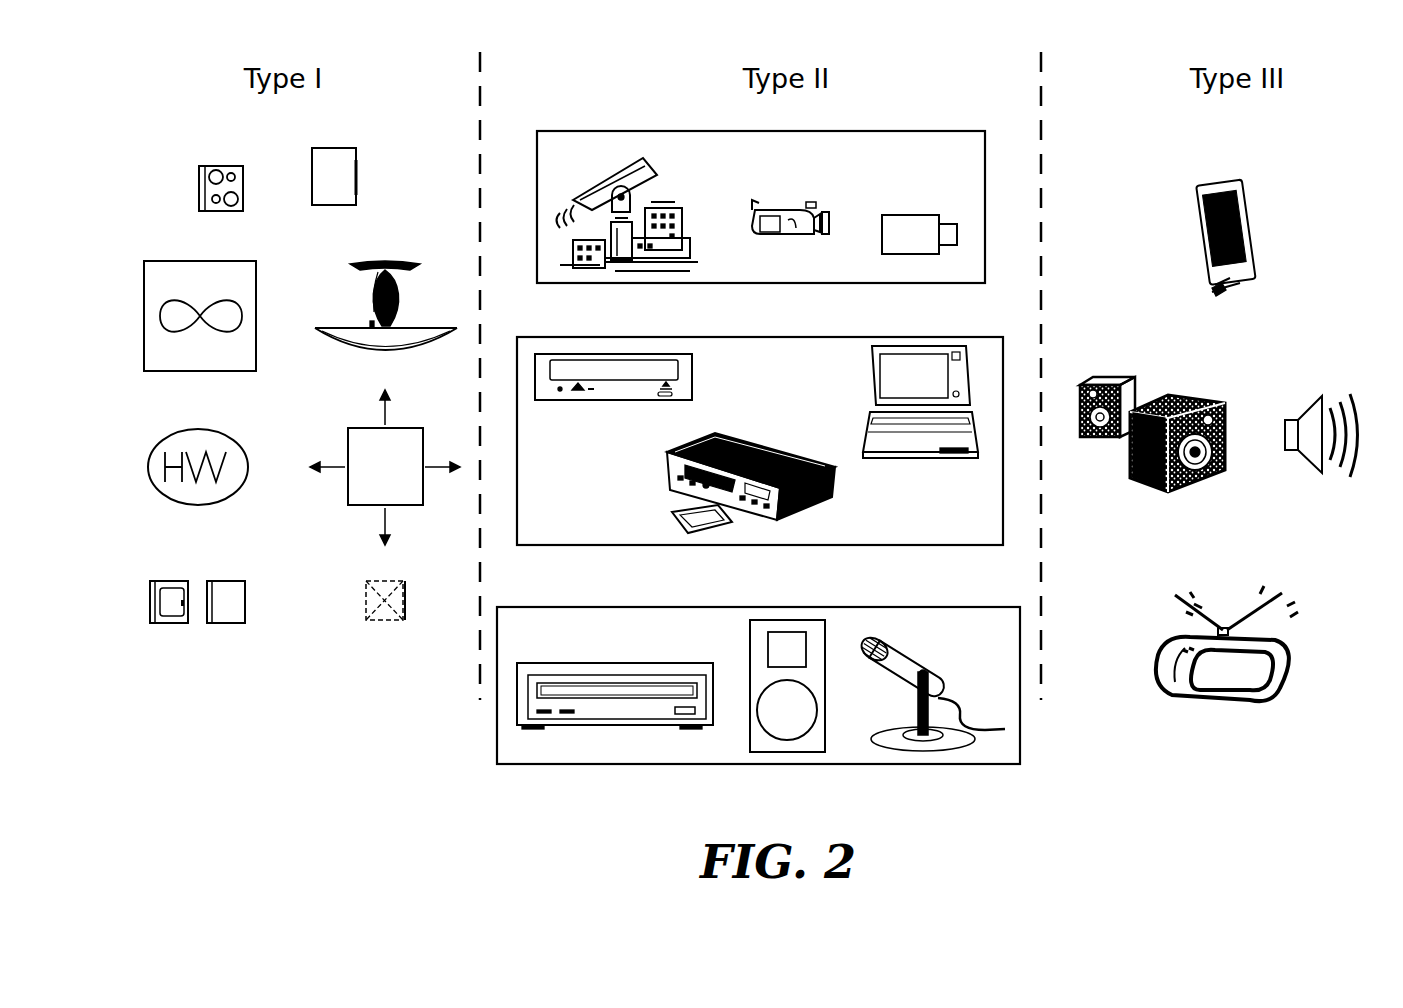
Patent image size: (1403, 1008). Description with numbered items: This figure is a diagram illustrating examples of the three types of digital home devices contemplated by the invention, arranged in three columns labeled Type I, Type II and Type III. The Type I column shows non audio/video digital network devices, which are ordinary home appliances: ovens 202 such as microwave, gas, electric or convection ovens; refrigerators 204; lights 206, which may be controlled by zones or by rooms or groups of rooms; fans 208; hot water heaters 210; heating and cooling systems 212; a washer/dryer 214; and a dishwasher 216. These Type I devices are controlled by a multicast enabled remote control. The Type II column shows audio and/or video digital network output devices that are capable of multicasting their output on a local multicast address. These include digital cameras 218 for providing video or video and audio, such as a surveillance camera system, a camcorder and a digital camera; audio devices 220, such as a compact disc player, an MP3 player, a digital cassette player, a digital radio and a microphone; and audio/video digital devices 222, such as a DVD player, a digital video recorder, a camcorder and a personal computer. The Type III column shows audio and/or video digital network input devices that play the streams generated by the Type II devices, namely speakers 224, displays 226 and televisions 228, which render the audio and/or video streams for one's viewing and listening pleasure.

The ovens 202 is at (247, 190).
The refrigerators 204 is at (358, 163).
The lights 206 is at (422, 315).
The fans 208 is at (258, 317).
The hot water heaters 210 is at (249, 466).
The heating and cooling systems 212 is at (425, 447).
The washer/dryer 214 is at (197, 638).
The dishwasher 216 is at (385, 630).
The digital cameras 218 is at (760, 284).
The audio devices 220 is at (716, 545).
The audio/video digital devices 222 is at (745, 765).
The speakers 224 is at (1208, 152).
The displays 226 is at (1228, 378).
The televisions 228 is at (1228, 572).